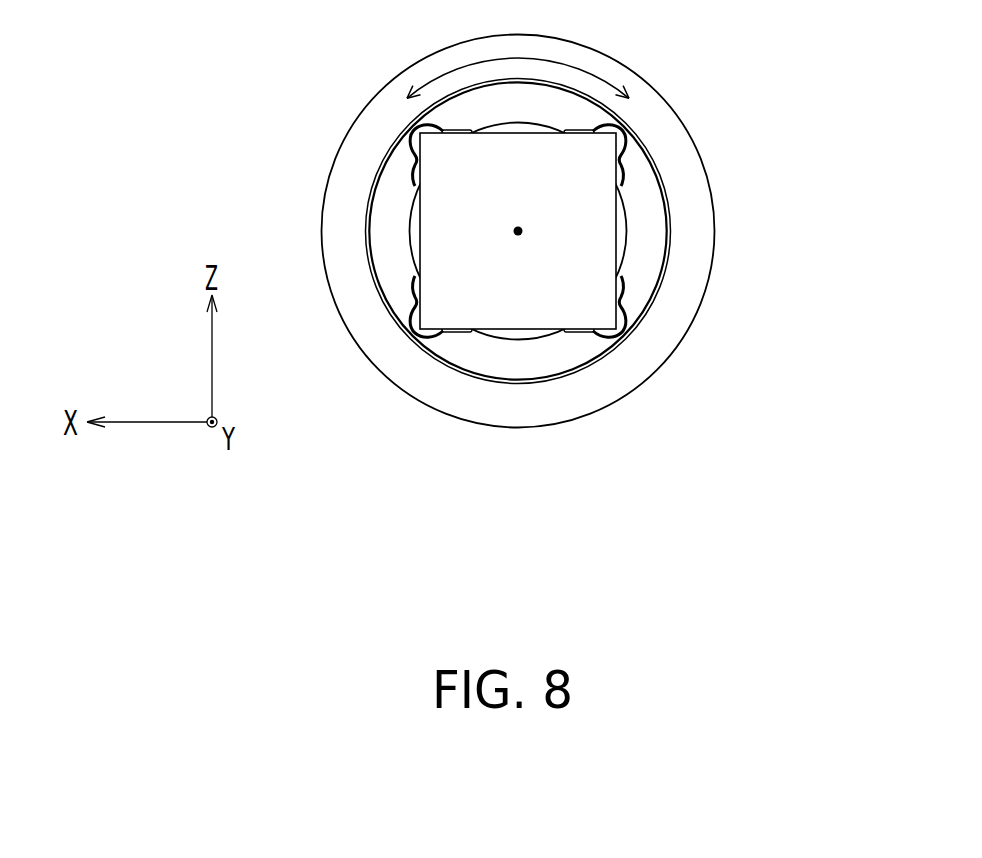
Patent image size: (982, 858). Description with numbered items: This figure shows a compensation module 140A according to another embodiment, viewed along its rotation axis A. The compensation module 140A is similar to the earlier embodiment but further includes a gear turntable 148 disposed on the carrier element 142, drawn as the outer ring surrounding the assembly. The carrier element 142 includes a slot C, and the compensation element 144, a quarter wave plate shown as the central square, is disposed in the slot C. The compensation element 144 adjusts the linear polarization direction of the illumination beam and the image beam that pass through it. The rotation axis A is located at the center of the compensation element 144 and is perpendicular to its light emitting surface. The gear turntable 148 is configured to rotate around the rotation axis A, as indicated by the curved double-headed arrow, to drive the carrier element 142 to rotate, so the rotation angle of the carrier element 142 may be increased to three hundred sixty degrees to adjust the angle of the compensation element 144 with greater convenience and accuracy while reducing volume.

The compensation module 140A is at (537, 252).
The carrier element 142 is at (392, 205).
The compensation element 144 is at (592, 278).
The gear turntable 148 is at (660, 128).
The rotation axis A is at (513, 233).
The slot C is at (623, 227).